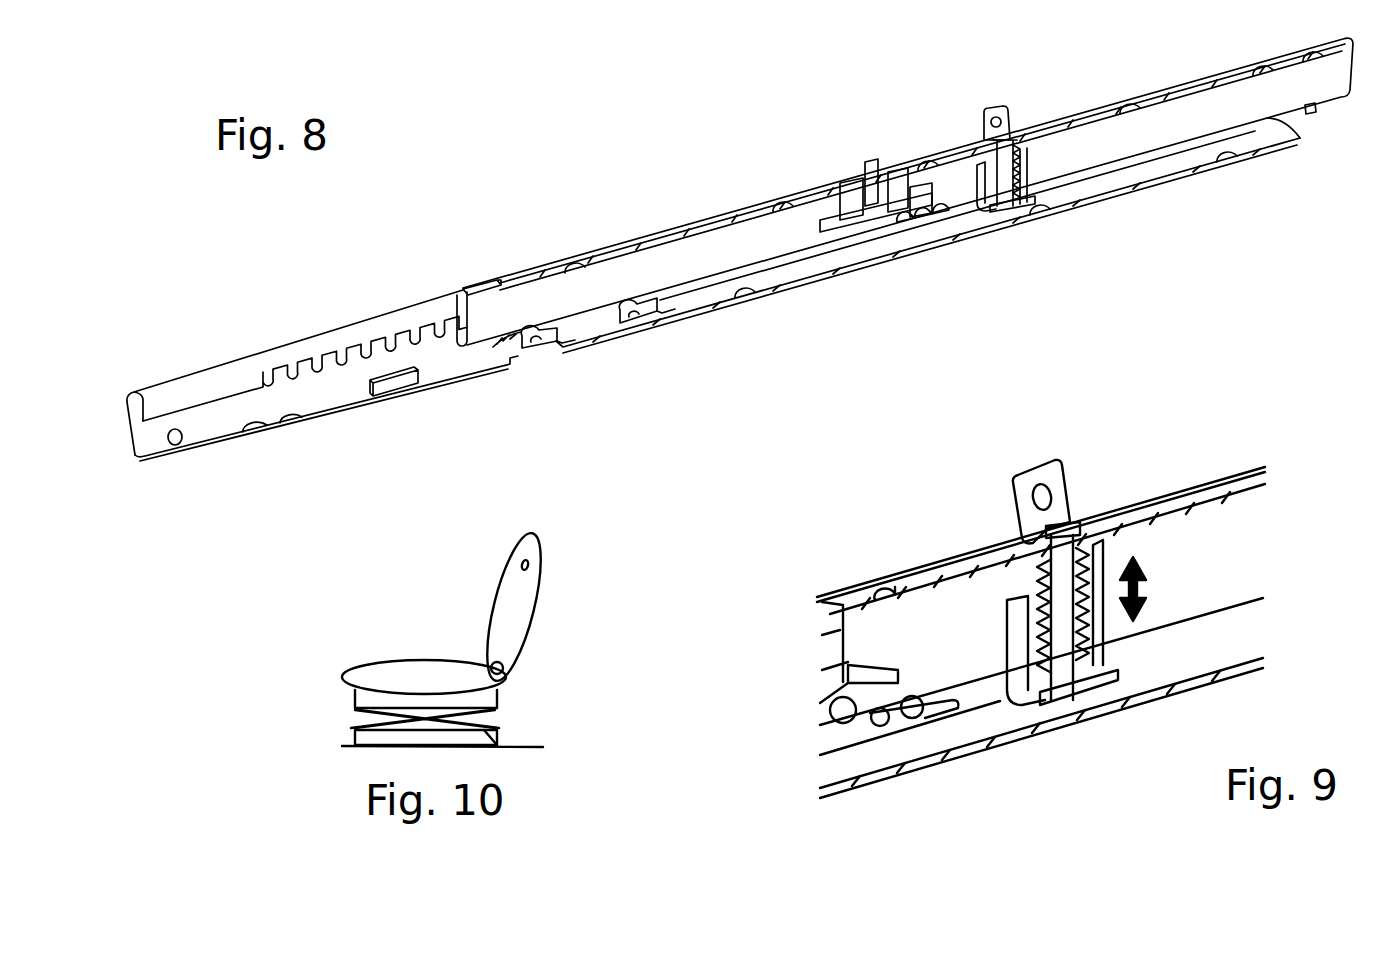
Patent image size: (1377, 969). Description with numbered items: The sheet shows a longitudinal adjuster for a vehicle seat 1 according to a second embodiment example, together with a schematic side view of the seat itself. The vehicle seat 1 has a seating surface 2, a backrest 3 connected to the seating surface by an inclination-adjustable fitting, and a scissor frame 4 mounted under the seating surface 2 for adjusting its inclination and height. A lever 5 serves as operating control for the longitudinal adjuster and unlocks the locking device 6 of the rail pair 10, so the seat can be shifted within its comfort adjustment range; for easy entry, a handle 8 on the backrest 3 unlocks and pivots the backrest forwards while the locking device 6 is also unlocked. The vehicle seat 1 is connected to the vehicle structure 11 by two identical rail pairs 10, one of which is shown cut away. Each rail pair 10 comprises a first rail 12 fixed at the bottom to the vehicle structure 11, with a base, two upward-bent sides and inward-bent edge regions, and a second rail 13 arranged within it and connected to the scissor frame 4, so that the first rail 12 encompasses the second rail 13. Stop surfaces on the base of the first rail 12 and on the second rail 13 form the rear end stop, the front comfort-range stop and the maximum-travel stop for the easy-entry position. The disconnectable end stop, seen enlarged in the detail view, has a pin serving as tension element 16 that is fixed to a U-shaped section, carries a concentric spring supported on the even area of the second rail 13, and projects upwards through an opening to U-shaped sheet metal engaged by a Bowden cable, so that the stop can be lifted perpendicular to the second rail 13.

In FIG. 10, the vehicle seat 1 is at (388, 624).
In FIG. 10, the seating surface 2 is at (390, 673).
In FIG. 10, the backrest 3 is at (520, 602).
In FIG. 10, the scissor frame 4 is at (397, 719).
In FIG. 10, the lever 5 is at (340, 732).
In FIG. 8, the locking device 6 is at (873, 256).
In FIG. 9, the locking device 6 is at (1041, 632).
In FIG. 10, the handle 8 is at (528, 565).
In FIG. 8, the rail pair 10 is at (723, 365).
In FIG. 10, the rail pair 10 is at (497, 730).
In FIG. 10, the vehicle structure 11 is at (520, 746).
In FIG. 8, the first rail 12 is at (210, 425).
In FIG. 8, the second rail 13 is at (490, 283).
In FIG. 9, the tension element 16 is at (1072, 623).